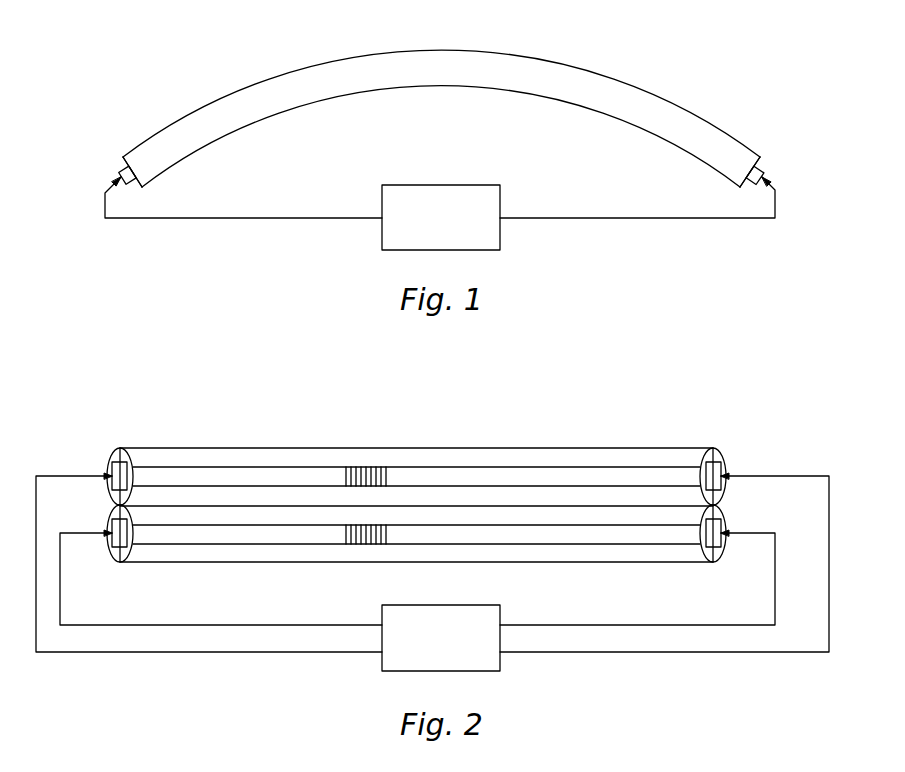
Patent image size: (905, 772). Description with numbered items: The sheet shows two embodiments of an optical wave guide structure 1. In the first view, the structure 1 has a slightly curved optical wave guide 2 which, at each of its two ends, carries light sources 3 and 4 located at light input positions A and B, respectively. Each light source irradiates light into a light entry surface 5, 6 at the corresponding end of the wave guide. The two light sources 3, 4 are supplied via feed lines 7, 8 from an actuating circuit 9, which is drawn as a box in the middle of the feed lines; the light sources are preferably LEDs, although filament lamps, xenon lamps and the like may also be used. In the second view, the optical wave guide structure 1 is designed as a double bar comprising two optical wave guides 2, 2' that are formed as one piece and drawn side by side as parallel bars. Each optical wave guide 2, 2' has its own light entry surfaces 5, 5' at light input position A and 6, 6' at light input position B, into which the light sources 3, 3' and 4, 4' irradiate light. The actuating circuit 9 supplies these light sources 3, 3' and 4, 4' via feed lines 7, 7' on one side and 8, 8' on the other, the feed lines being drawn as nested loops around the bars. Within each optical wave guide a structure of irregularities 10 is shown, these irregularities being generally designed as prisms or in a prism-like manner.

In FIG. 1, the optical wave guide structure 1 is at (670, 72).
In FIG. 2, the optical wave guide structure 1 is at (278, 422).
In FIG. 1, the optical wave guide 2 is at (441, 93).
In FIG. 2, the optical wave guide 2 is at (416, 569).
In FIG. 2, the second optical wave guide 2' is at (416, 443).
In FIG. 1, the light source 3 is at (86, 171).
In FIG. 2, the light source 3 is at (150, 560).
In FIG. 2, the light source of second wave guide 3' is at (83, 444).
In FIG. 1, the light source 4 is at (788, 154).
In FIG. 2, the light source 4 is at (722, 567).
In FIG. 2, the light source of second wave guide 4' is at (695, 428).
In FIG. 1, the light entry surface 5 is at (91, 154).
In FIG. 2, the light entry surface 5 is at (108, 558).
In FIG. 2, the light entry surface of second wave guide 5' is at (150, 450).
In FIG. 1, the light entry surface 6 is at (759, 222).
In FIG. 2, the light entry surface 6 is at (704, 556).
In FIG. 2, the light entry surface of second wave guide 6' is at (678, 439).
In FIG. 1, the feed line 7 is at (243, 187).
In FIG. 2, the feed line 7 is at (221, 577).
In FIG. 2, the feed line of second wave guide 7' is at (209, 591).
In FIG. 1, the feed line 8 is at (637, 193).
In FIG. 2, the feed line 8 is at (637, 577).
In FIG. 2, the feed line of second wave guide 8' is at (664, 588).
In FIG. 1, the actuating circuit 9 is at (441, 217).
In FIG. 2, the actuating circuit 9 is at (441, 638).
In FIG. 2, the irregularities 10 is at (372, 465).
In FIG. 1, the light input position A is at (120, 160).
In FIG. 2, the light input position A is at (105, 491).
In FIG. 1, the light input position B is at (760, 160).
In FIG. 2, the light input position B is at (723, 491).